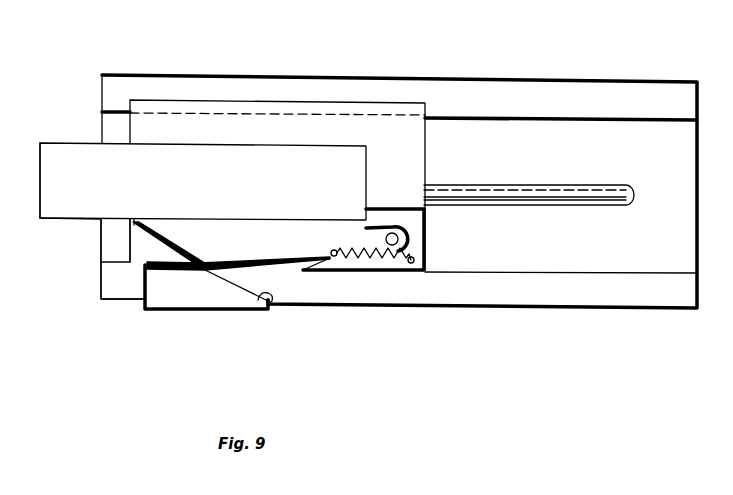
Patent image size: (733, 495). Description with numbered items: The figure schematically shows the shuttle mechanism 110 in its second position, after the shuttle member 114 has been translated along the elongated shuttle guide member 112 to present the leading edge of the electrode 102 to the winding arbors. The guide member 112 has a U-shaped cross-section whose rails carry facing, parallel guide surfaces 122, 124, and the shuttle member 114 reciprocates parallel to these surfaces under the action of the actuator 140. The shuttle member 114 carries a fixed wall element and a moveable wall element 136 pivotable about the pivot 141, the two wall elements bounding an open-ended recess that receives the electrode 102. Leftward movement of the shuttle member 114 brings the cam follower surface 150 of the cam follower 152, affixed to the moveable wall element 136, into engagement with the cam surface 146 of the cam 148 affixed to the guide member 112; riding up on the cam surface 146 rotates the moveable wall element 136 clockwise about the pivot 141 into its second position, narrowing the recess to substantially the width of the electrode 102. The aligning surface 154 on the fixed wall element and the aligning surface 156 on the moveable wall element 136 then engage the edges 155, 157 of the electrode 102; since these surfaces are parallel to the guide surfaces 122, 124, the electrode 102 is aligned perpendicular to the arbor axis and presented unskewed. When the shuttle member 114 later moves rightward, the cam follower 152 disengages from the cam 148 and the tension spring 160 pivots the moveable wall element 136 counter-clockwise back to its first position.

The electrode 102 is at (70, 143).
The shuttle mechanism 110 is at (474, 80).
The shuttle guide member 112 is at (101, 298).
The shuttle member 114 is at (428, 95).
The guide surface 122 is at (112, 112).
The guide surface 124 is at (104, 262).
The moveable wall element 136 is at (251, 300).
The actuator 140 is at (610, 184).
The pivot 141 is at (399, 238).
The cam surface 146 is at (283, 305).
The cam 148 is at (218, 303).
The cam follower surface 150 is at (144, 267).
The cam follower 152 is at (197, 263).
The aligning surface 154 is at (262, 146).
The edge 155 is at (42, 143).
The aligning surface 156 is at (304, 219).
The edge 157 is at (70, 221).
The tension spring 160 is at (371, 272).